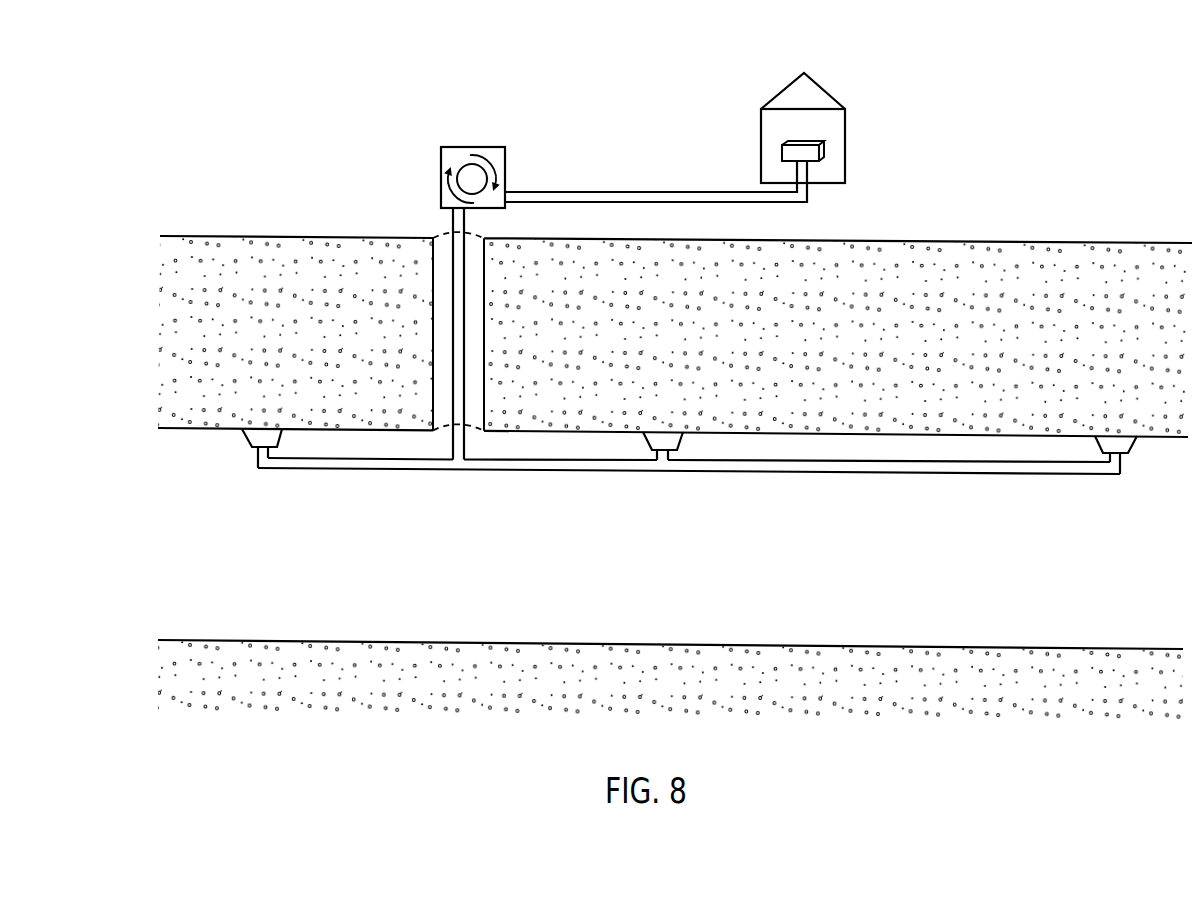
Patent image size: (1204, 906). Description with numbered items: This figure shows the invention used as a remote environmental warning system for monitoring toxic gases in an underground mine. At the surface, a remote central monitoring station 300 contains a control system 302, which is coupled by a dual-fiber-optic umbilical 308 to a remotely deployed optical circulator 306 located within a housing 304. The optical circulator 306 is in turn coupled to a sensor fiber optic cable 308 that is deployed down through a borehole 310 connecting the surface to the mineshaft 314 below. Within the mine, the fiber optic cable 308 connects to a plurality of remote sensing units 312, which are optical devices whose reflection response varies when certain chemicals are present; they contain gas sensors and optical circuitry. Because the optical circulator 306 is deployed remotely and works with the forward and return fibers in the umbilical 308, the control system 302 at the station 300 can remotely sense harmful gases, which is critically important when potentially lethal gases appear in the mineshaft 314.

The remote central monitoring station 300 is at (839, 103).
The control system 302 is at (793, 150).
The housing 304 is at (475, 147).
The optical circulator 306 is at (485, 189).
The dual-fiber-optic umbilical / sensor fiber optic cable 308 is at (618, 192).
The borehole 310 is at (443, 265).
The remote sensing units 312 is at (270, 457).
The mineshaft 314 is at (672, 673).